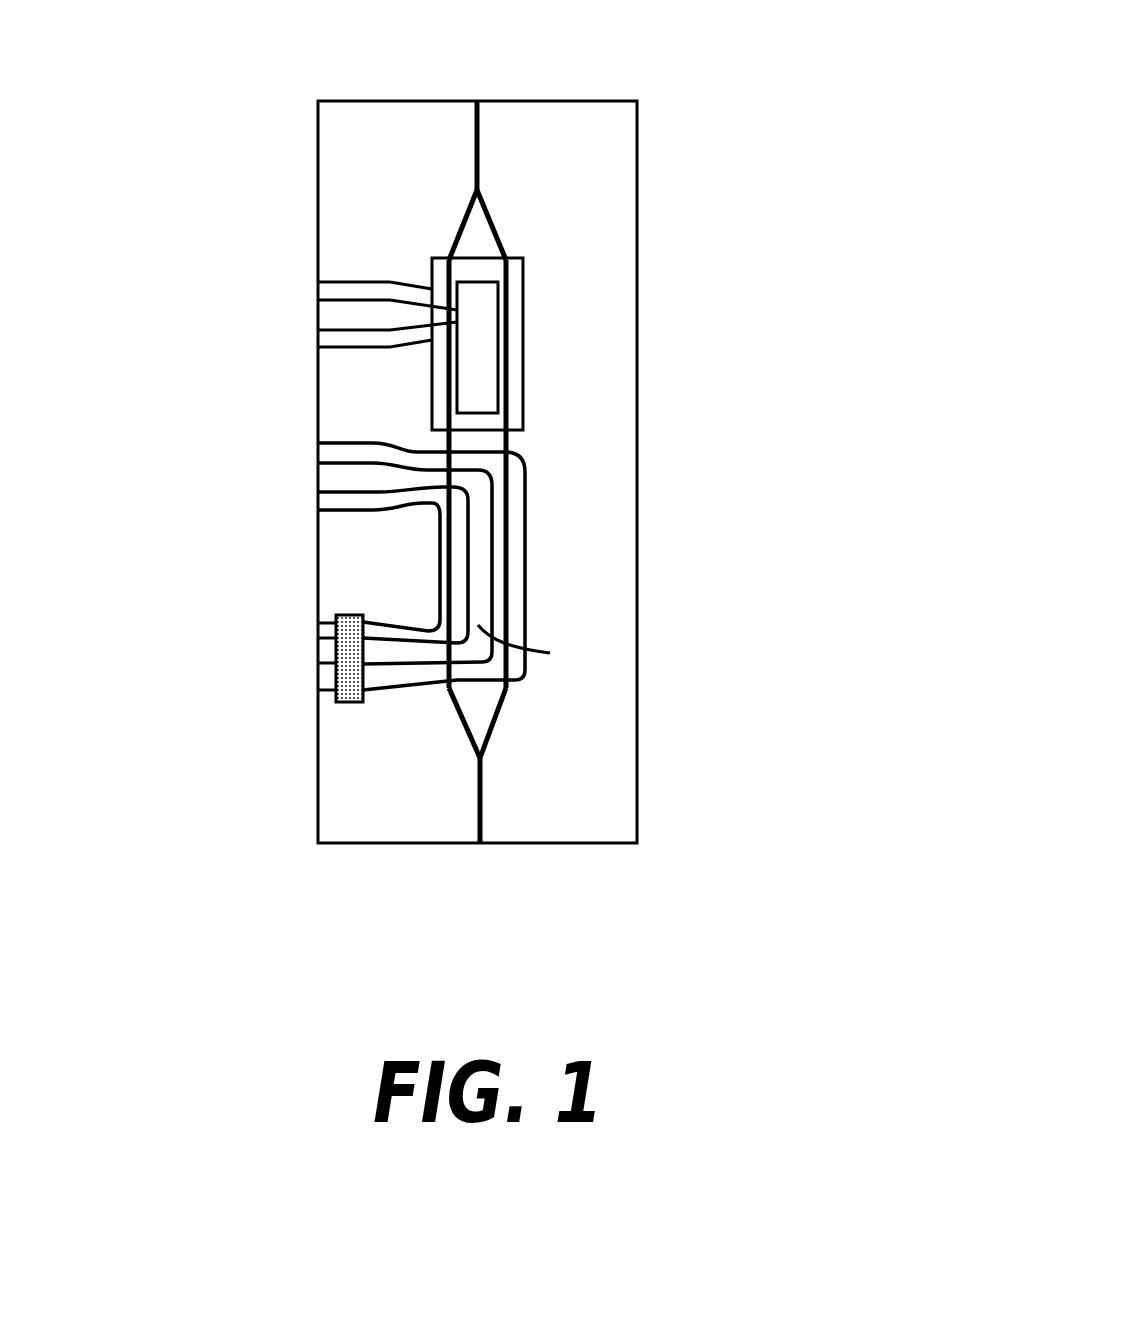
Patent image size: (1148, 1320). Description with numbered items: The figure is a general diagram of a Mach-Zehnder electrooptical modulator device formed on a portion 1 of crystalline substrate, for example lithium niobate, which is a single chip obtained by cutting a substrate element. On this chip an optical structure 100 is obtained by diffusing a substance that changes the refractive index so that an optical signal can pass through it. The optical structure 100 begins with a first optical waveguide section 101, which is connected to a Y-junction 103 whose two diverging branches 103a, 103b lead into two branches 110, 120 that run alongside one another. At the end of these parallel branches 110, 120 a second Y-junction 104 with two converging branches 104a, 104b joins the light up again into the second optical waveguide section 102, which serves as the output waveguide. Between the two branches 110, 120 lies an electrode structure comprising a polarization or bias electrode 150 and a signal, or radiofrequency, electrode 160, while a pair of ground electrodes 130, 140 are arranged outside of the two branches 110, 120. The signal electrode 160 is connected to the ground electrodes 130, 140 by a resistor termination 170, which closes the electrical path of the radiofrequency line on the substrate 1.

The portion of crystalline substrate 1 is at (564, 541).
The optical structure 100 is at (485, 465).
The first optical waveguide section 101 is at (482, 822).
The second optical waveguide section 102 is at (478, 157).
The Y-junction 103 is at (542, 754).
The diverging branch 103a is at (490, 740).
The diverging branch 103b is at (463, 725).
The second Y-junction 104 is at (581, 177).
The converging branch 104a is at (535, 225).
The converging branch 104b is at (455, 226).
The branch 110 is at (447, 568).
The branch 120 is at (523, 512).
The ground electrode 130 is at (597, 423).
The ground electrode 140 is at (332, 597).
The polarization or bias electrode 150 is at (472, 367).
The signal electrode 160 is at (550, 653).
The resistor termination 170 is at (317, 665).